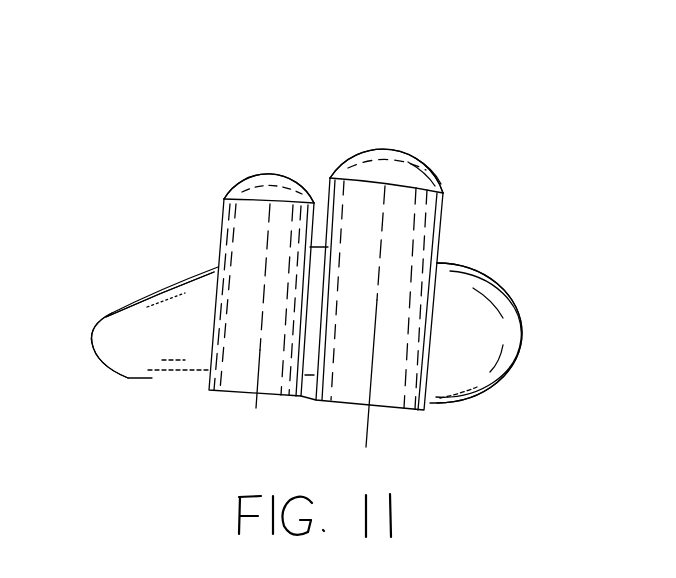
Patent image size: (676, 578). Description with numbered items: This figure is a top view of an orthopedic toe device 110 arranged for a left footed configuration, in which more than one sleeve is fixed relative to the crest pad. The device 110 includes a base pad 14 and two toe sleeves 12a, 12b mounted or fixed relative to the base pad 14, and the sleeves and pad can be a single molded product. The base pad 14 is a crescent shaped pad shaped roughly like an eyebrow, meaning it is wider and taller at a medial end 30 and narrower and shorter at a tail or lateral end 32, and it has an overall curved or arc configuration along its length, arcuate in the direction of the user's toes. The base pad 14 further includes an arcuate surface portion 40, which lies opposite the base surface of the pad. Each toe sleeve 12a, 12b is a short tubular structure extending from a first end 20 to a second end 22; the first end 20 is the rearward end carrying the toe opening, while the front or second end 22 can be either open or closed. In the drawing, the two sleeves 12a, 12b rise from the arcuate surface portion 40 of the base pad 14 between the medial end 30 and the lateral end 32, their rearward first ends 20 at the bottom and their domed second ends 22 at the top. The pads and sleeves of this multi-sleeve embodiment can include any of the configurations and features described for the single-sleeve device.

The orthopedic toe device 110 is at (272, 98).
The base pad 14 is at (167, 287).
The arcuate surface portion 40 is at (192, 305).
The lateral end 32 is at (90, 347).
The medial end 30 is at (521, 358).
The toe sleeve 12a is at (427, 364).
The toe sleeve 12b is at (214, 339).
The second end 22 is at (270, 172).
The first end 20 is at (318, 402).